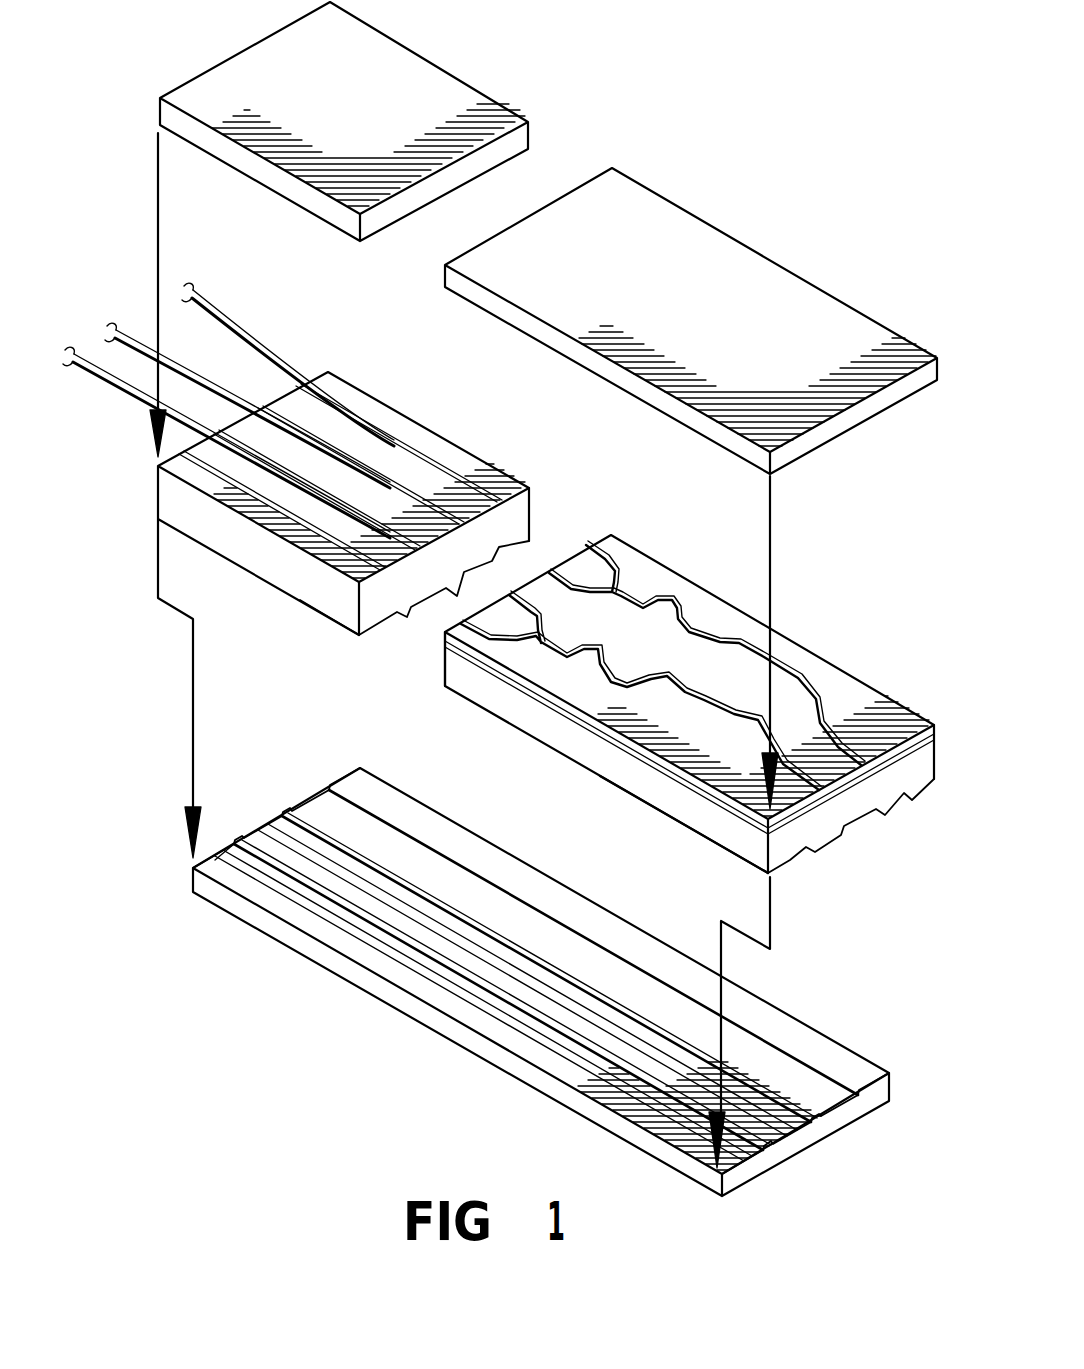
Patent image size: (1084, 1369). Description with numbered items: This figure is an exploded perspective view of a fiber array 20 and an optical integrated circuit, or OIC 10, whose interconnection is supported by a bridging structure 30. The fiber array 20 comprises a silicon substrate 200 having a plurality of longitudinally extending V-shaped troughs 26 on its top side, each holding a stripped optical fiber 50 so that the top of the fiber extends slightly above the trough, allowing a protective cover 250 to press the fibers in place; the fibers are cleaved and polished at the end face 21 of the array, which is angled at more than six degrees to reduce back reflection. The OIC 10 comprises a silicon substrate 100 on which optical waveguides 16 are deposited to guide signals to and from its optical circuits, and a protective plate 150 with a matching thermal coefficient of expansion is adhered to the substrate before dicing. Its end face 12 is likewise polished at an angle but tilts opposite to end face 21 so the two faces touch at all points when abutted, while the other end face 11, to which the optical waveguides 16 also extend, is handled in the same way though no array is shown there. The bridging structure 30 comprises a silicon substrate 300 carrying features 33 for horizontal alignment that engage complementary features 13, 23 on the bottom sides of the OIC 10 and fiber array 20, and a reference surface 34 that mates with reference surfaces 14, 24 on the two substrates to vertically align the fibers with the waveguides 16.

The OIC 10 is at (680, 711).
The other end face 11 is at (880, 800).
The end face 12 is at (448, 672).
The complementary features 13 is at (845, 838).
The reference surface 14 is at (690, 835).
The optical waveguides 16 is at (670, 610).
The fiber array 20 is at (312, 485).
The end face 21 is at (520, 514).
The complementary features 23 is at (400, 605).
The reference surface 24 is at (342, 620).
The troughs 26 is at (358, 465).
The bridging structure 30 is at (541, 982).
The features 33 is at (808, 1068).
The reference surface 34 is at (215, 858).
The optical fiber 50 is at (227, 378).
The silicon substrate 100 is at (564, 732).
The protective plate 150 is at (668, 404).
The silicon substrate 200 is at (274, 558).
The protective cover 250 is at (282, 178).
The silicon substrate 300 is at (334, 960).